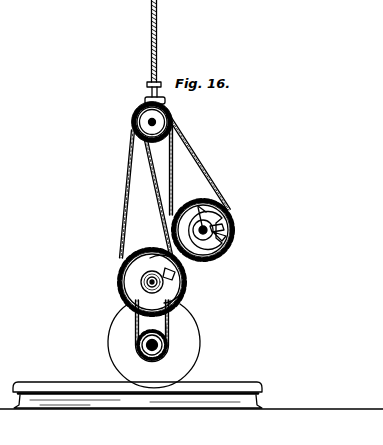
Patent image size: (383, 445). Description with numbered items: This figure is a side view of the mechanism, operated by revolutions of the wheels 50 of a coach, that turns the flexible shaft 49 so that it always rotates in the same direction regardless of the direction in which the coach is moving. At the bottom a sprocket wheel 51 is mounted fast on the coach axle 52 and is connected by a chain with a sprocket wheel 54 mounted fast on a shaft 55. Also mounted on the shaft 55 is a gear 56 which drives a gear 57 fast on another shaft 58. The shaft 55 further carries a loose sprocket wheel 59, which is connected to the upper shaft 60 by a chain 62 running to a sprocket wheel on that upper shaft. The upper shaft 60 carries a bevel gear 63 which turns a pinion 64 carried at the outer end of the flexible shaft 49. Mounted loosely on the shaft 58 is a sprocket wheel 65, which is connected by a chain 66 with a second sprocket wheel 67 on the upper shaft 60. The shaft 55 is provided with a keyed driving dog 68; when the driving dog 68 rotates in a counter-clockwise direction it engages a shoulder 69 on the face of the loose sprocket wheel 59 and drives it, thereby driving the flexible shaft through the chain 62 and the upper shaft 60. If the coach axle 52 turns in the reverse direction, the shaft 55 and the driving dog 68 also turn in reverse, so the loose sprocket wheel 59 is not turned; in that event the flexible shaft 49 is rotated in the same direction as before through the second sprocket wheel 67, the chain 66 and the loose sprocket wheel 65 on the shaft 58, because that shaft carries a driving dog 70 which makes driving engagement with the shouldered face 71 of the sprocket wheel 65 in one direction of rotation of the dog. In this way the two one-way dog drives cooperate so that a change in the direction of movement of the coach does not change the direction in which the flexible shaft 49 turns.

The flexible shaft 49 is at (157, 36).
The wheels 50 is at (183, 363).
The sprocket wheel 51 is at (167, 333).
The coach axle 52 is at (146, 344).
The sprocket wheel 54 is at (122, 290).
The shaft 55 is at (160, 283).
The gear 56 is at (182, 298).
The gear 57 is at (231, 245).
The shaft 58 is at (205, 200).
The loose sprocket wheel 59 is at (146, 252).
The upper shaft 60 is at (143, 123).
The chain 62 is at (131, 183).
The bevel gear 63 is at (140, 102).
The pinion 64 is at (163, 102).
The sprocket wheel 65 is at (215, 200).
The chain 66 is at (208, 170).
The second sprocket wheel 67 is at (172, 117).
The driving dog 68 is at (155, 267).
The shoulder 69 is at (169, 307).
The driving dog 70 is at (221, 222).
The shouldered face 71 is at (230, 231).